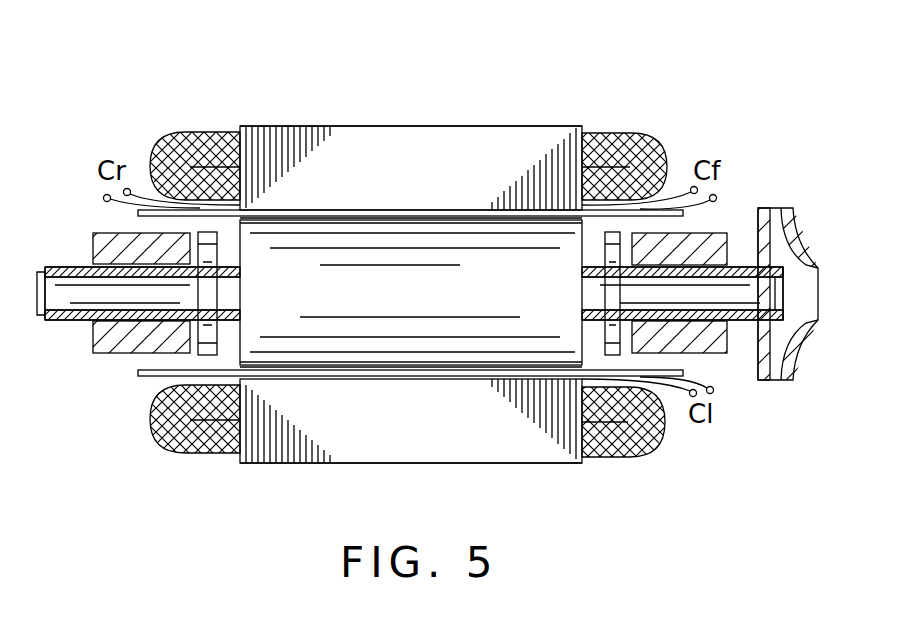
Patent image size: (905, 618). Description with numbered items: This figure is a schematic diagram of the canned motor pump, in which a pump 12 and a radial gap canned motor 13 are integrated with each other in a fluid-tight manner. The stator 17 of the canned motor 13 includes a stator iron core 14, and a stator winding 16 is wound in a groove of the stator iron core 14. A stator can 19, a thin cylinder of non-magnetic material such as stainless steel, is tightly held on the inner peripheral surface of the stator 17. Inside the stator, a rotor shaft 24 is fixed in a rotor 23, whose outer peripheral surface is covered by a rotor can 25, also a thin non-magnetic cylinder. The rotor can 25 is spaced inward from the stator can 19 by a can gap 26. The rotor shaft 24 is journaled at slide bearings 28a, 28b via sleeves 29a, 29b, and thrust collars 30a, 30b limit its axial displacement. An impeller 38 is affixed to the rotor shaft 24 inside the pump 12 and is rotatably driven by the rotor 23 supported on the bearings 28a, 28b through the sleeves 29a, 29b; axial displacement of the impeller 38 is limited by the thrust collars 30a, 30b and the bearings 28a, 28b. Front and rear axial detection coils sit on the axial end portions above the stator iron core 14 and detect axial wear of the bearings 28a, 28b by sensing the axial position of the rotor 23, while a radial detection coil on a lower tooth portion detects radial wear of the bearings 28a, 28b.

The pump 12 is at (814, 186).
The radial gap canned motor 13 is at (156, 118).
The stator iron core 14 is at (257, 127).
The stator winding 16 is at (193, 150).
The stator 17 is at (298, 126).
The stator can 19 is at (360, 210).
The rotor 23 is at (478, 232).
The rotor shaft 24 is at (57, 285).
The rotor can 25 is at (428, 220).
The can gap 26 is at (393, 216).
The bearing 28a is at (718, 240).
The bearing 28b is at (100, 238).
The sleeve 29a is at (717, 353).
The sleeve 29b is at (105, 355).
The thrust collar 30a is at (613, 355).
The thrust collar 30b is at (196, 357).
The impeller 38 is at (803, 256).